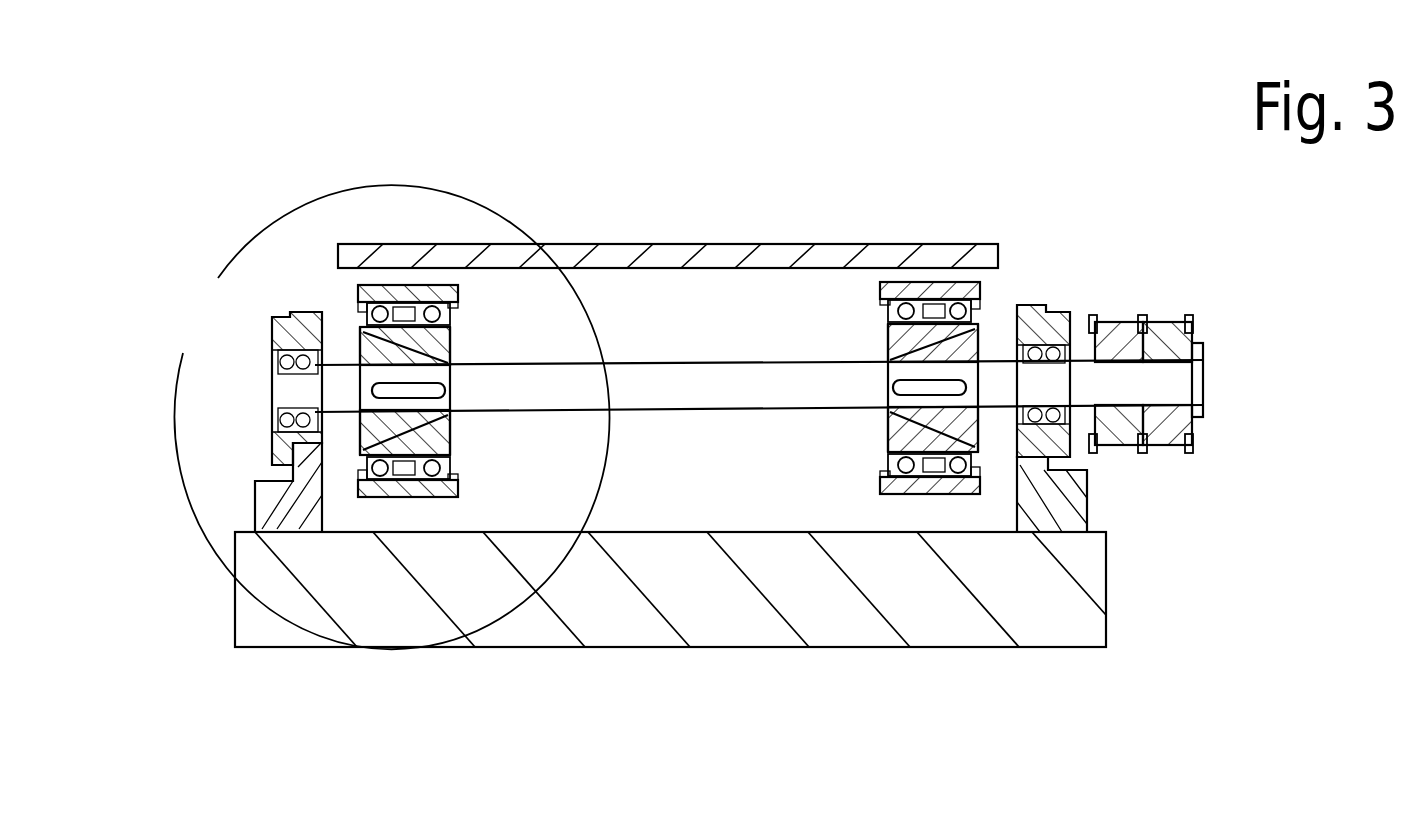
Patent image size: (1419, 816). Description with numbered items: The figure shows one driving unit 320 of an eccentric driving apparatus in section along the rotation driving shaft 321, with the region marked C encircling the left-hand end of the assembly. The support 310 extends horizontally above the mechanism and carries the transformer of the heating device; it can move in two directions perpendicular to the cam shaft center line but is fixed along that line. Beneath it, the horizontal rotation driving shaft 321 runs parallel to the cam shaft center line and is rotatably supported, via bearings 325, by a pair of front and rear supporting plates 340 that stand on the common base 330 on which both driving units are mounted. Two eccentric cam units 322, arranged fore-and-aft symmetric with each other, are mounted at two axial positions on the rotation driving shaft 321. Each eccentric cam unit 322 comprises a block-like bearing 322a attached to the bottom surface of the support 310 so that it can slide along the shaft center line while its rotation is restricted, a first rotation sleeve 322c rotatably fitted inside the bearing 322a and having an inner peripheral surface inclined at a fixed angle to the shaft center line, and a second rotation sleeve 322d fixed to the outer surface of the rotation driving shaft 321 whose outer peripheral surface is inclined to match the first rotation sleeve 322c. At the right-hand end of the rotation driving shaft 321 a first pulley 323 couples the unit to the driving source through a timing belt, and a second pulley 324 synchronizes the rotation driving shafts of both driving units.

The support 310 is at (677, 243).
The driving unit 320 is at (832, 465).
The rotation driving shaft 321 is at (667, 395).
The eccentric cam unit 322 is at (661, 418).
The block-like bearing 322a is at (425, 292).
The first rotation sleeve 322c is at (355, 327).
The second rotation sleeve 322d is at (455, 355).
The first pulley 323 is at (1175, 445).
The second pulley 324 is at (1112, 435).
The bearing 325 is at (273, 420).
The base 330 is at (663, 630).
The supporting plate 340 is at (294, 518).
The detail circle C is at (392, 417).